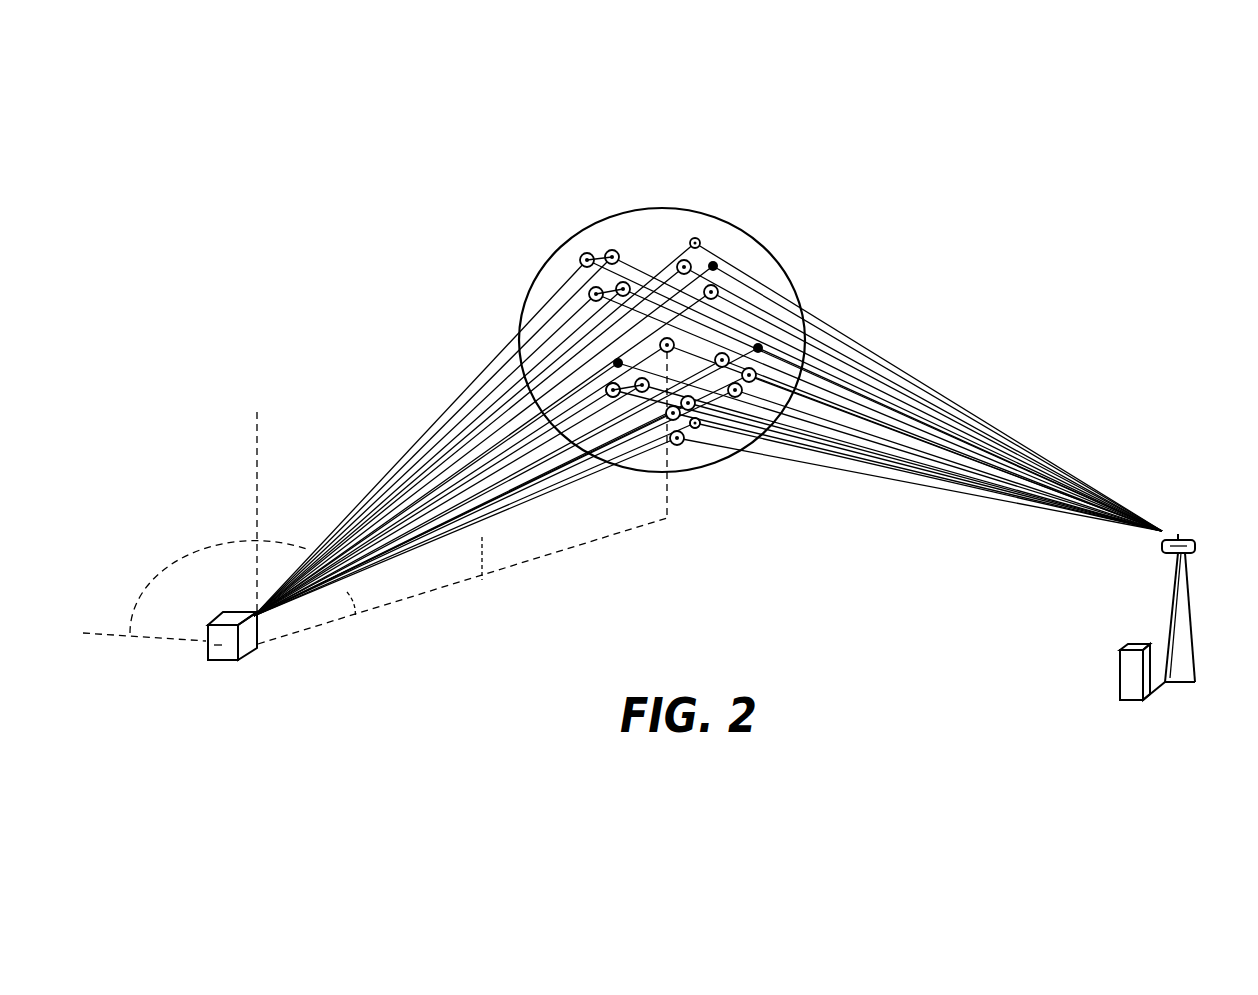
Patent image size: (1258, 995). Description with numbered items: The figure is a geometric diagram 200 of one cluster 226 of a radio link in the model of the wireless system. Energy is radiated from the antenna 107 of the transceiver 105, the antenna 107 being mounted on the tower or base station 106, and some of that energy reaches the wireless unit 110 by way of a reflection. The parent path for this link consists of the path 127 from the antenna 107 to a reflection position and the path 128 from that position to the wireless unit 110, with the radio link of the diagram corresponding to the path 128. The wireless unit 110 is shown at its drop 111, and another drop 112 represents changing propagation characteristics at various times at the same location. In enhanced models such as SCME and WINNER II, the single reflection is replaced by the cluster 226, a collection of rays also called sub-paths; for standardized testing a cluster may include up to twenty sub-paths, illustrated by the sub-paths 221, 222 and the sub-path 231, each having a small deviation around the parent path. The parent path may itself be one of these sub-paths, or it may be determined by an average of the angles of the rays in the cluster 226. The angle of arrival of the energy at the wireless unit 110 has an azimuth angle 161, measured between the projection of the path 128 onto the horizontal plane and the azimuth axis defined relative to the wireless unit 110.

The geometric diagram 200 is at (348, 249).
The transceiver 105 is at (1125, 647).
The tower or base station 106 is at (1178, 627).
The antenna 107 is at (1190, 533).
The wireless unit 110 is at (223, 612).
The wireless drop 111 is at (188, 682).
The wireless drop 112 is at (252, 435).
The path 127 is at (700, 357).
The path 128 is at (600, 400).
The azimuth angle 161 is at (220, 545).
The sub-path 221 is at (836, 322).
The sub-path 222 is at (660, 267).
The cluster 226 is at (676, 208).
The sub-path 231 is at (585, 393).